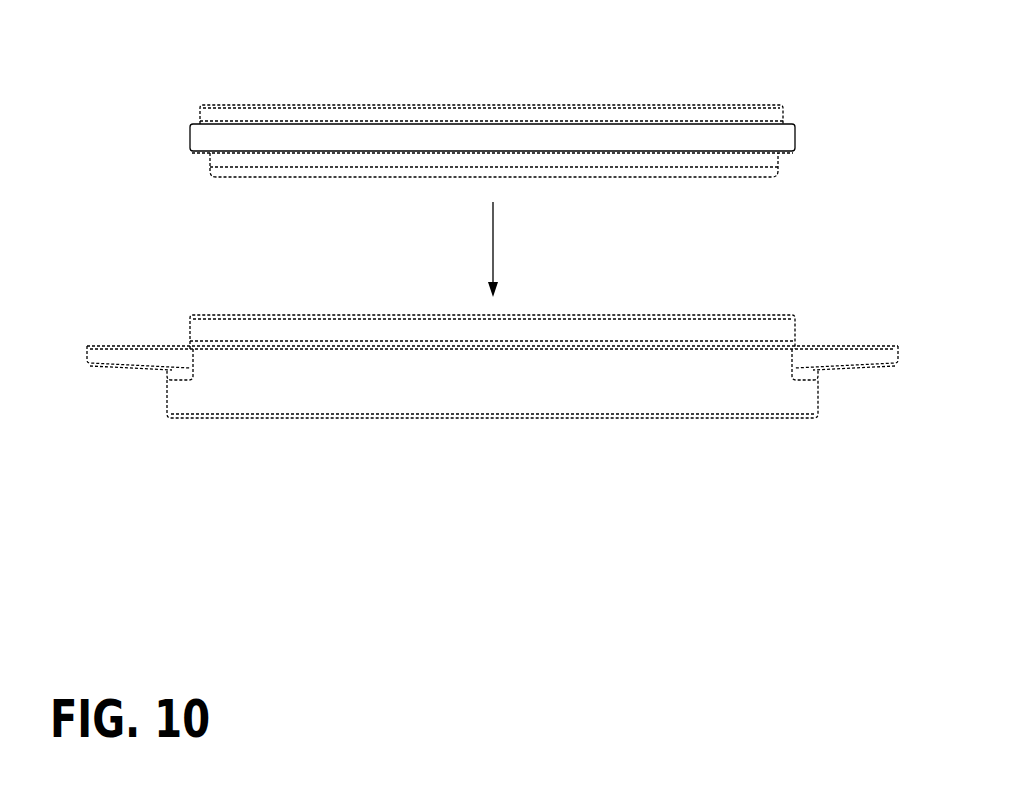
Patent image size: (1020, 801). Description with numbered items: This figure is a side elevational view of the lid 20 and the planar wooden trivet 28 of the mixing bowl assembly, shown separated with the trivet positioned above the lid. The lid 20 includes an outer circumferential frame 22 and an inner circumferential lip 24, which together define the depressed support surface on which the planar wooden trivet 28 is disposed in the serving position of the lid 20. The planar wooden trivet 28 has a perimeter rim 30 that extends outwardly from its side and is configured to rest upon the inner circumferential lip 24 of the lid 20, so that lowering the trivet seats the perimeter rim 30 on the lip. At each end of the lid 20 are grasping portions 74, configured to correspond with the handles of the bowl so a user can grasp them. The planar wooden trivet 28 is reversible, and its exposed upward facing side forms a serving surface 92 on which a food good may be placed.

The lid 20 is at (489, 376).
The outer circumferential frame 22 is at (402, 383).
The inner circumferential lip 24 is at (277, 333).
The planar wooden trivet 28 is at (443, 127).
The perimeter rim 30 is at (583, 135).
The grasping portions 74 is at (88, 352).
The serving surface 92 is at (386, 105).